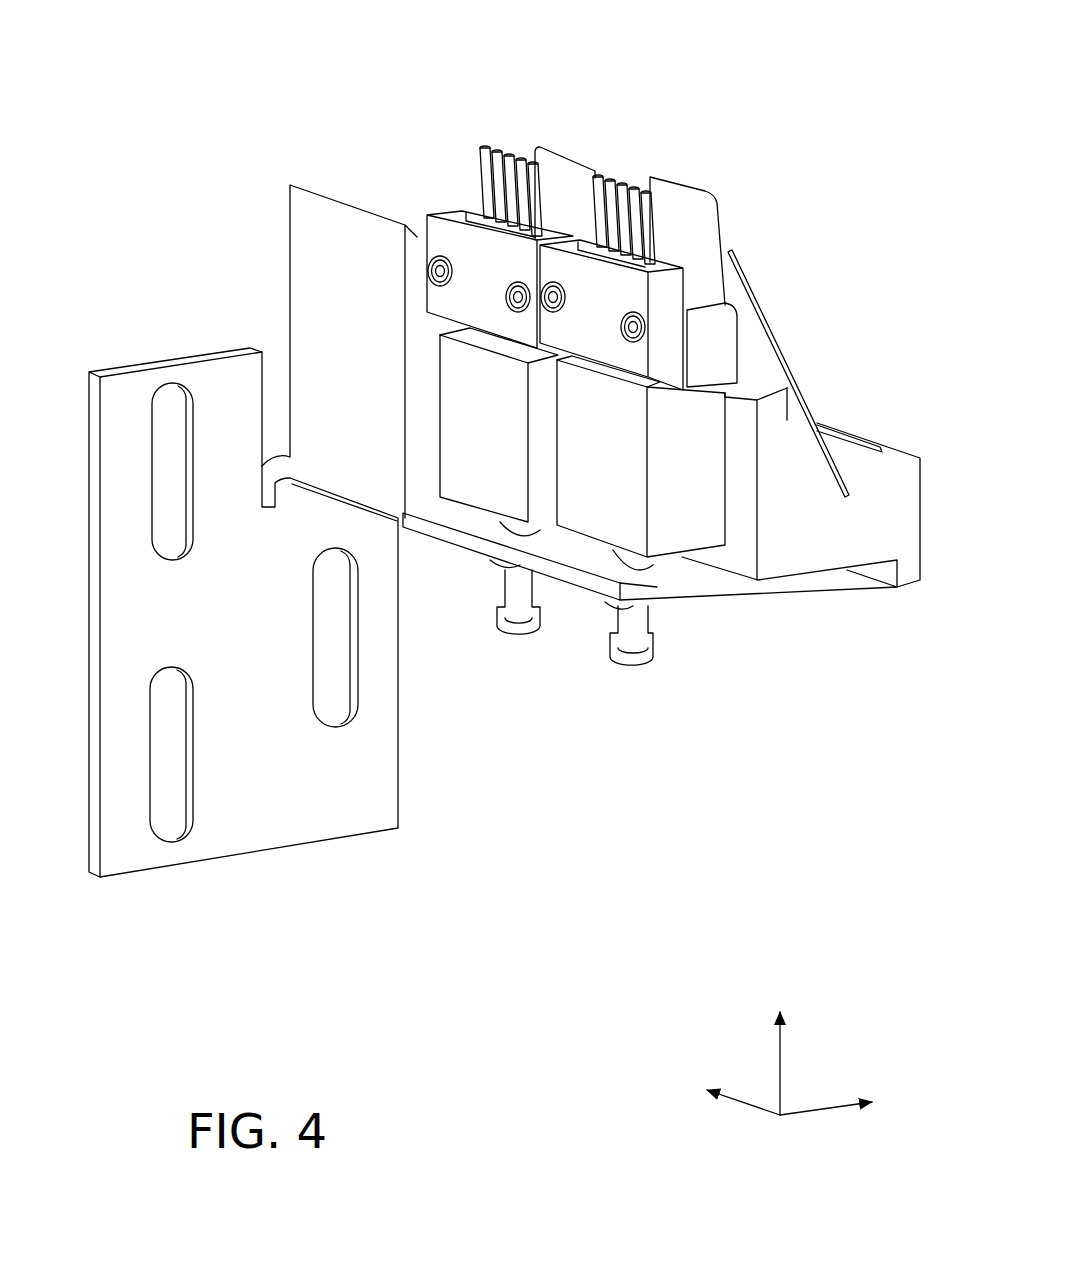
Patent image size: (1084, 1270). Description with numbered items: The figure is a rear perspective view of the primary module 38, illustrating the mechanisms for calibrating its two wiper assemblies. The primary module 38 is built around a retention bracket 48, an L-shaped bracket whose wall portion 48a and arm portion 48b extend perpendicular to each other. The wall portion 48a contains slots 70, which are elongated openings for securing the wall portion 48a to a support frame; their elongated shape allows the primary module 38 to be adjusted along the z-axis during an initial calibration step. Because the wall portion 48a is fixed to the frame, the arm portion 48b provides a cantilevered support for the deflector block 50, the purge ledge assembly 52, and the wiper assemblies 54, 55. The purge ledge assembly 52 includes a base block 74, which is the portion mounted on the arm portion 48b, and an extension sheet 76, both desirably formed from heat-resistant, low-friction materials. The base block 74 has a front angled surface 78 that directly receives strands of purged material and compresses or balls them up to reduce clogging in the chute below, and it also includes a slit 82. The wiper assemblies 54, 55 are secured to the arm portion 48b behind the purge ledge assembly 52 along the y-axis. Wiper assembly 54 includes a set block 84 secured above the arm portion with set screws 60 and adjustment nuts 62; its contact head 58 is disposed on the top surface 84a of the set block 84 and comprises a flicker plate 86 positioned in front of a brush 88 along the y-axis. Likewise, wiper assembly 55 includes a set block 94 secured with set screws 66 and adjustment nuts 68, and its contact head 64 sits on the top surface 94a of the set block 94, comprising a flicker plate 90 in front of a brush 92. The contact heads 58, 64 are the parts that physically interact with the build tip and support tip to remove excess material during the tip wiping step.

The primary module 38 is at (628, 852).
The retention bracket 48 is at (210, 347).
The wall portion 48a is at (303, 830).
The arm portion 48b is at (680, 588).
The deflector block 50 is at (302, 230).
The purge ledge assembly 52 is at (887, 373).
The wiper assembly 54 is at (750, 127).
The wiper assembly 55 is at (610, 78).
The contact head 58 is at (705, 226).
The set screws 60 is at (633, 647).
The adjustment nuts 62 is at (605, 603).
The contact head 64 is at (472, 187).
The set screws 66 is at (520, 617).
The adjustment nuts 68 is at (492, 560).
The slots 70 is at (190, 538).
The base block 74 is at (907, 588).
The extension sheet 76 is at (772, 325).
The front angled surface 78 is at (830, 430).
The slit 82 is at (820, 477).
The set block 84 is at (598, 513).
The top surface 84a is at (617, 372).
The flicker plate 86 is at (702, 192).
The brush 88 is at (620, 178).
The flicker plate 90 is at (548, 147).
The brush 92 is at (492, 148).
The set block 94 is at (482, 480).
The top surface 94a is at (497, 343).